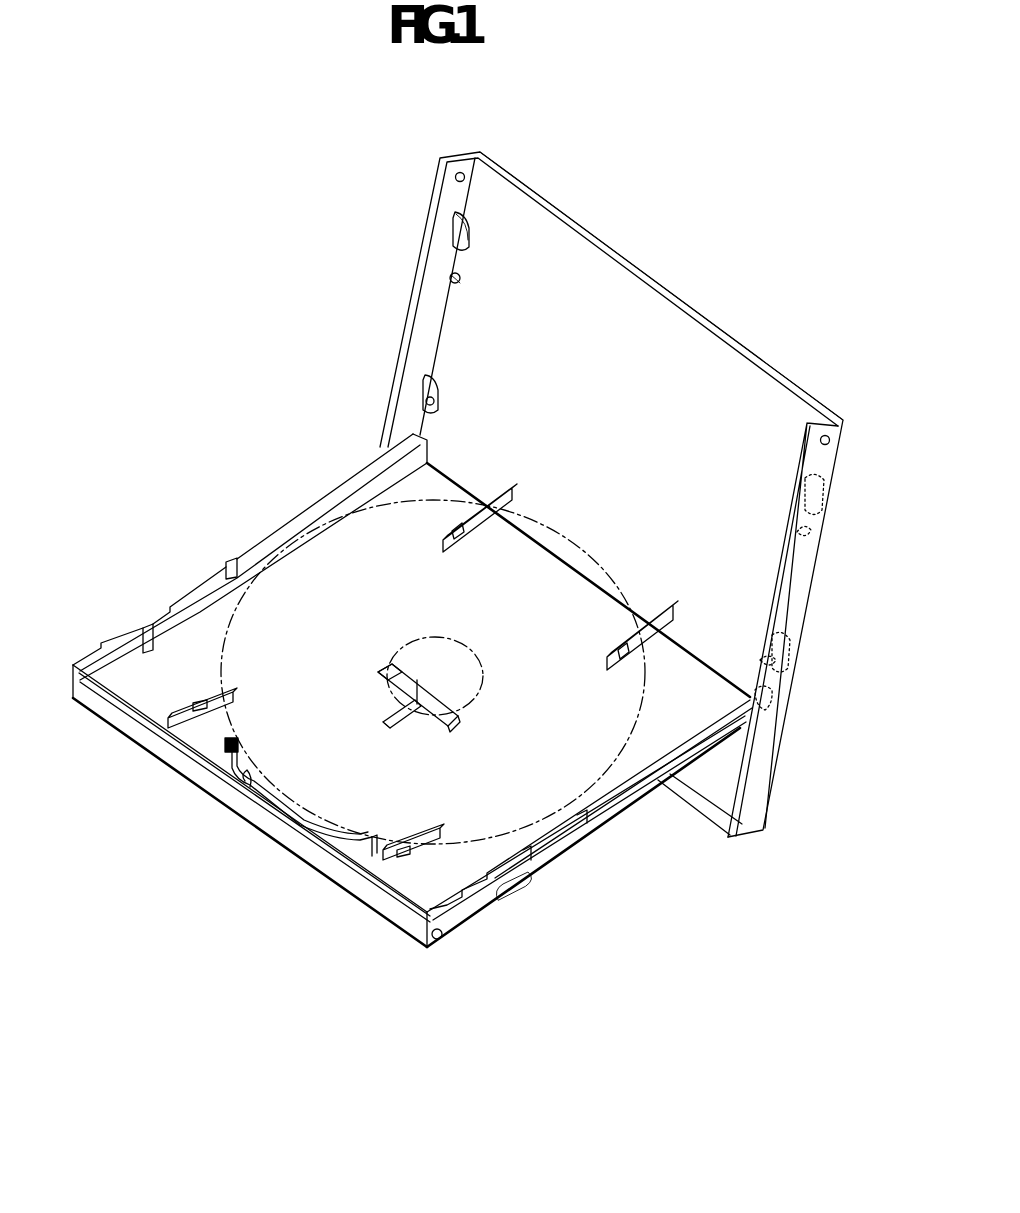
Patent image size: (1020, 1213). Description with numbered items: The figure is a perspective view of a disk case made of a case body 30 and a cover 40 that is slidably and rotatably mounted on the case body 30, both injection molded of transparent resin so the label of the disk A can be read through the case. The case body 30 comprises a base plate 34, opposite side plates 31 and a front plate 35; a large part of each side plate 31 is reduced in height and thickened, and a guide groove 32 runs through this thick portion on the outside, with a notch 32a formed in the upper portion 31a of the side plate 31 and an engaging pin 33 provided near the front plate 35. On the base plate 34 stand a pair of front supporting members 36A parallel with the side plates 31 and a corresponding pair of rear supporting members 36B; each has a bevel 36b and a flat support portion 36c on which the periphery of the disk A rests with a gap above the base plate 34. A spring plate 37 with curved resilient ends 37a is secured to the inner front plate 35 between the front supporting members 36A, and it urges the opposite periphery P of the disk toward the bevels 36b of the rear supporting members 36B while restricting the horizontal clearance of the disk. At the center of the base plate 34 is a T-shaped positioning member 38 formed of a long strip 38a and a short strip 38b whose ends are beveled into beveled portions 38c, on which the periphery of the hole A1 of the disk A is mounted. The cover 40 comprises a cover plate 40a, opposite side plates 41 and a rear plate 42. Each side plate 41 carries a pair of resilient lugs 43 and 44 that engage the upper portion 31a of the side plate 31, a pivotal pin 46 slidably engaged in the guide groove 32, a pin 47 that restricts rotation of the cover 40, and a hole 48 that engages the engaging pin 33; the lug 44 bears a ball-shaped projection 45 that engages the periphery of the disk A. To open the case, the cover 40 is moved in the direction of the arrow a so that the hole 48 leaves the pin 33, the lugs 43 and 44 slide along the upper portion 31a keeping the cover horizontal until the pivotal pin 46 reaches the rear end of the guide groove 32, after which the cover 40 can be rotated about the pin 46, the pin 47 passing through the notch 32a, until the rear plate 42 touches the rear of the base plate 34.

The case body 30 is at (280, 465).
The side plate 31 is at (280, 530).
The upper portion of the side plate 31a is at (363, 473).
The guide groove 32 is at (613, 807).
The notch 32a is at (207, 590).
The engaging pin 33 is at (443, 940).
The base plate 34 is at (307, 817).
The front plate 35 is at (330, 875).
The front supporting member 36A is at (188, 722).
The rear supporting member 36B is at (500, 480).
The bevel 36b is at (193, 703).
The flat support portion 36c is at (222, 687).
The spring plate 37 is at (247, 767).
The curved resilient end 37a is at (227, 740).
The positioning member 38 is at (416, 680).
The long strip 38a is at (483, 670).
The short strip 38b is at (385, 688).
The beveled portion 38c is at (380, 685).
The cover 40 is at (680, 268).
The cover plate 40a is at (714, 322).
The side plate of the cover 41 is at (432, 300).
The rear plate 42 is at (690, 787).
The resilient lug 43 is at (460, 238).
The resilient lug 44 is at (440, 386).
The ball-shaped projection 45 is at (436, 405).
The pivotal pin 46 is at (772, 705).
The pin 47 is at (462, 283).
The hole 48 is at (466, 174).
The disk A is at (195, 600).
The hole of the disk A1 is at (450, 636).
The opposite periphery P is at (570, 538).
The arrow a is at (595, 972).